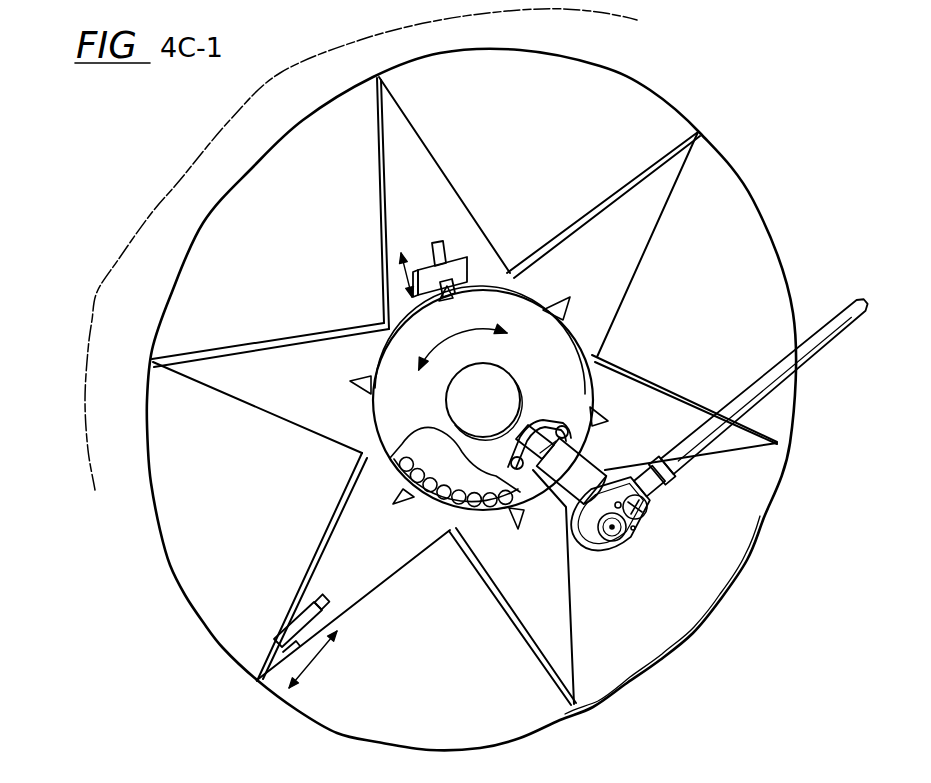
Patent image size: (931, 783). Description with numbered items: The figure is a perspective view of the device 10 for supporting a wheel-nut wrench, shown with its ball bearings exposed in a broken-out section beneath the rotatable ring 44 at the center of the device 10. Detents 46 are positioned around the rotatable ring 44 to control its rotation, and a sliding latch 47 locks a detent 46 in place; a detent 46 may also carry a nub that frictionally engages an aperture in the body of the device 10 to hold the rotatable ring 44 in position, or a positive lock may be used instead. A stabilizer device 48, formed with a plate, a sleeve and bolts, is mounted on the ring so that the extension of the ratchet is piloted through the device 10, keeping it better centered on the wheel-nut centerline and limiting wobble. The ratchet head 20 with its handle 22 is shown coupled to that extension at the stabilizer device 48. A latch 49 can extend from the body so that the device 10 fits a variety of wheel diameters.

The device 10 is at (273, 372).
The ratchet head 20 is at (645, 530).
The handle 22 is at (823, 357).
The rotatable ring 44 is at (397, 400).
The detent 46 is at (541, 308).
The sliding latch 47 is at (464, 258).
The stabilizer device 48 is at (533, 483).
The latch 49 is at (297, 641).